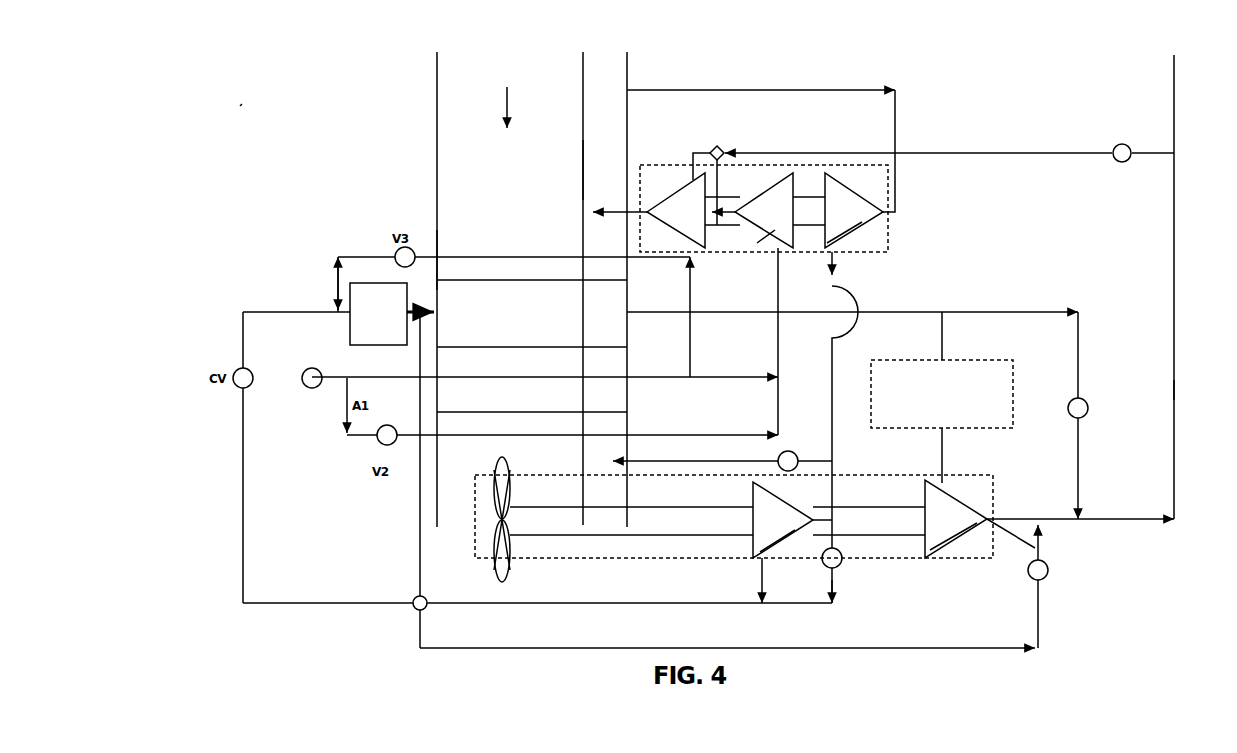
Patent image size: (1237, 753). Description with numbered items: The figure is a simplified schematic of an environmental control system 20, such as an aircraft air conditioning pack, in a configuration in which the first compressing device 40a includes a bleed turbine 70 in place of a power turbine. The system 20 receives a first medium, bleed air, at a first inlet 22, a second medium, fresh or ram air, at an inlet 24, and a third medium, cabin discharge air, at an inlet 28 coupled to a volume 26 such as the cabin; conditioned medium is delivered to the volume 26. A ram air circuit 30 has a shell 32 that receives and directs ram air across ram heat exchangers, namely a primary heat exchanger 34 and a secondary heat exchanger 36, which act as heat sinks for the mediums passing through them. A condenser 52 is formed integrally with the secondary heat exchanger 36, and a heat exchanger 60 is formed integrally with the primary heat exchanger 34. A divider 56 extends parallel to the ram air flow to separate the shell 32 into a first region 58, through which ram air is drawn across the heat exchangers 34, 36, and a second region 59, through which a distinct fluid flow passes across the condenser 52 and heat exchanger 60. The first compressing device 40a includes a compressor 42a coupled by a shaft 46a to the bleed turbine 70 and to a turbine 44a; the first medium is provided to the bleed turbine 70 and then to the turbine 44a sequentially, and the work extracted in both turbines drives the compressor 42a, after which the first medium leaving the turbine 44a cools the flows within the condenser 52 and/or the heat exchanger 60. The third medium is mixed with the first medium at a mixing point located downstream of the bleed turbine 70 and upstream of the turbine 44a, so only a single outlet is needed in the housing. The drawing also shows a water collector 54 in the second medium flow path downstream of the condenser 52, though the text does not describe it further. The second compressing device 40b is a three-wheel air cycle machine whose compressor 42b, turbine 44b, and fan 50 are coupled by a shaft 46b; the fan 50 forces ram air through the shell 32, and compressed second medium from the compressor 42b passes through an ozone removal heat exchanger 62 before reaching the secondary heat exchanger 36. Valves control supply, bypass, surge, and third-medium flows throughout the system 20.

The environmental control system 20 is at (253, 108).
The first inlet 22 is at (302, 368).
The inlet 24 is at (617, 87).
The volume 26 is at (1203, 390).
The inlet 28 is at (1176, 146).
The ram air circuit 30 is at (425, 82).
The shell 32 is at (435, 140).
The primary heat exchanger 34 is at (532, 391).
The secondary heat exchanger 36 is at (532, 313).
The first compressing device 40a is at (888, 195).
The second compressing device 40b is at (925, 575).
The compressor 42a is at (853, 195).
The compressor 42b is at (770, 545).
The turbine 44a is at (690, 187).
The turbine 44b is at (1035, 548).
The shaft 46a is at (812, 227).
The shaft 46b is at (638, 527).
The fan 50 is at (505, 545).
The condenser 52 is at (837, 313).
The water collector 54 is at (942, 397).
The divider 56 is at (581, 165).
The first region 58 is at (503, 127).
The second region 59 is at (594, 170).
The heat exchanger 60 is at (545, 378).
The ozone removal heat exchanger 62 is at (378, 314).
The bleed turbine 70 is at (770, 237).